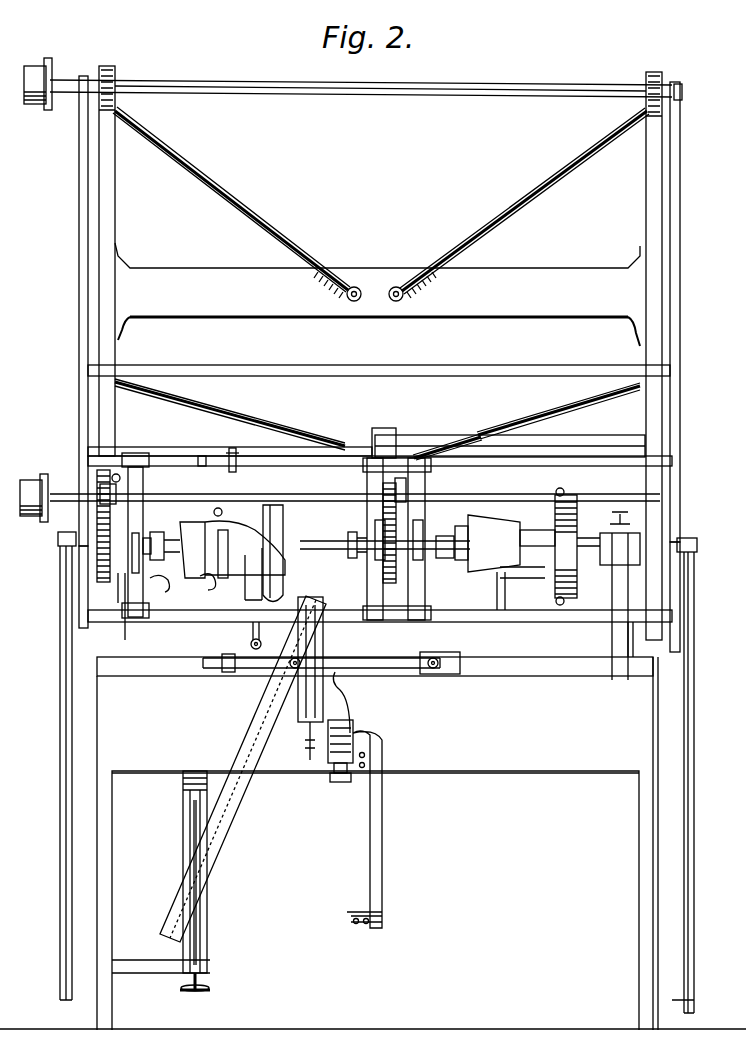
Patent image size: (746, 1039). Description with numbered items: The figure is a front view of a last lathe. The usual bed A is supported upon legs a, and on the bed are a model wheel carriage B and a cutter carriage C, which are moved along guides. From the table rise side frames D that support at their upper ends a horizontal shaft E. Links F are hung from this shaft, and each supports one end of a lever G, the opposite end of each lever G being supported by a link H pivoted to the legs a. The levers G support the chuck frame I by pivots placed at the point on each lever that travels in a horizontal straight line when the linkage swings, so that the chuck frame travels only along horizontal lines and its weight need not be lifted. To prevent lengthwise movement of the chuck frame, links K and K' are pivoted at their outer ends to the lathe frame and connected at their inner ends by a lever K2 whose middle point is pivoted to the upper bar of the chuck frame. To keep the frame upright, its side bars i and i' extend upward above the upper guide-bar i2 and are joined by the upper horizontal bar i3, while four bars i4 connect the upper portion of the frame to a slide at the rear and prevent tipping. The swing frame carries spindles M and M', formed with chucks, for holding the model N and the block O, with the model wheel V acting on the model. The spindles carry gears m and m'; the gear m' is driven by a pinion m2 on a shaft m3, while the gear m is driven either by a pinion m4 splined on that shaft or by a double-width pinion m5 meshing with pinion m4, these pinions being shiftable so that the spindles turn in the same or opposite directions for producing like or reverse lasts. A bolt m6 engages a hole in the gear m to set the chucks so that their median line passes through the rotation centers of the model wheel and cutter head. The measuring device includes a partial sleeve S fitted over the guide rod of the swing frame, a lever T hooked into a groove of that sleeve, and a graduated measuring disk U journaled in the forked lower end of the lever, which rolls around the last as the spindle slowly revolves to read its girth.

The horizontal shaft E is at (290, 84).
The side frame D is at (117, 191).
The link F is at (78, 312).
The upper horizontal bar i3 is at (359, 368).
The bar i4 is at (262, 422).
The link K is at (230, 439).
The link K' is at (510, 431).
The lever K2 is at (358, 436).
The chuck frame I is at (307, 458).
The partial sleeve S is at (199, 448).
The upper guide-bar i2 is at (233, 450).
The lever T is at (218, 494).
The double-width pinion m5 is at (96, 494).
The gear m is at (73, 529).
The pinion m4 is at (114, 506).
The bolt m6 is at (122, 610).
The spindle M is at (161, 533).
The model N is at (232, 549).
The model wheel V is at (214, 512).
The measuring disk U is at (200, 568).
The model wheel carriage B is at (244, 578).
The shaft m3 is at (345, 514).
The pinion m2 is at (404, 478).
The gear m' is at (385, 533).
The spindle M' is at (447, 562).
The block O is at (487, 543).
The cutter carriage C is at (494, 594).
The lever G is at (58, 540).
The link H is at (60, 757).
The side bar i is at (62, 587).
The side bar i' is at (693, 597).
The bed A is at (190, 735).
The leg a is at (152, 893).